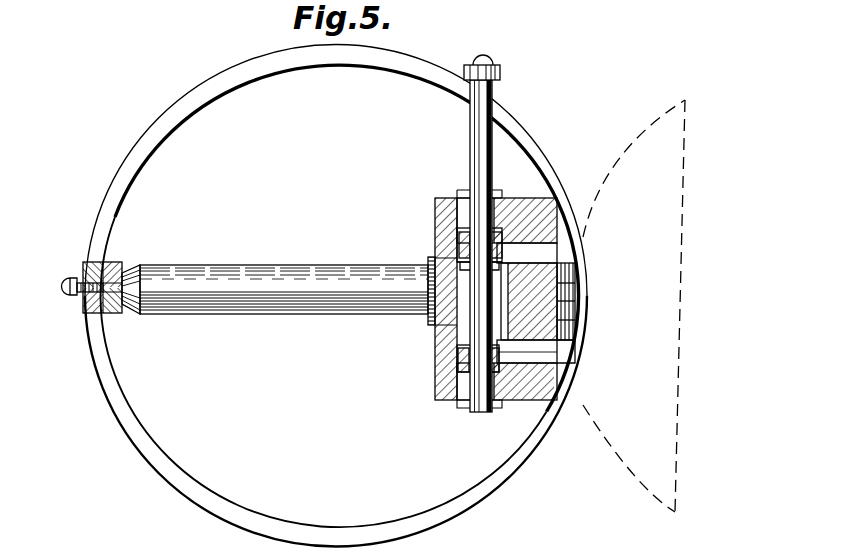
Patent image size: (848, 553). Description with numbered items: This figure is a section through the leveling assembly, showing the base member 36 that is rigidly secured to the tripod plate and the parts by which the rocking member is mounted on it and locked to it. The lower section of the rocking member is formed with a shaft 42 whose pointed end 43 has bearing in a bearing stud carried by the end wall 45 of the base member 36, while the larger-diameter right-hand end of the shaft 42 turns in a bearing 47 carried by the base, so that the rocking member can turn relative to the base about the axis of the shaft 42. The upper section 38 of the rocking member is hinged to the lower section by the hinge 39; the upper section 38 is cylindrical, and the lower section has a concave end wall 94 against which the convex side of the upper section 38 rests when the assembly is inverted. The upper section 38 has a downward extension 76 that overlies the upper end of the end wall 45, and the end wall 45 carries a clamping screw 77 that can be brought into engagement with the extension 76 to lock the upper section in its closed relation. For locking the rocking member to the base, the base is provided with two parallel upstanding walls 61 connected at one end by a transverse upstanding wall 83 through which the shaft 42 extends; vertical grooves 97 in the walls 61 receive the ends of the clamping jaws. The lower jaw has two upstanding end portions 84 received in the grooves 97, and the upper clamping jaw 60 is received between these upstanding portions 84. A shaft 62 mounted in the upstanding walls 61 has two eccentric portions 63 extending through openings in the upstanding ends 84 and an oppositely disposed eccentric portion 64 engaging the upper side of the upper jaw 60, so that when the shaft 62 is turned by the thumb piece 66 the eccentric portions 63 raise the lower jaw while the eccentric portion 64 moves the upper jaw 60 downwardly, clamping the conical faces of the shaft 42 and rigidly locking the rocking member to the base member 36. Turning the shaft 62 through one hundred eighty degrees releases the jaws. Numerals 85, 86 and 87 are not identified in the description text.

The base member 36 is at (132, 157).
The upper section 38 is at (578, 258).
The hinge 39 is at (576, 300).
The shaft 42 is at (262, 274).
The pointed end 43 is at (131, 274).
The end wall 45 is at (84, 302).
The bearing 47 is at (572, 364).
The upper clamping jaw 60 is at (540, 258).
The upstanding walls 61 is at (514, 198).
The shaft 62 is at (492, 150).
The eccentric portions 63 is at (460, 230).
The eccentric portion 64 is at (460, 258).
The thumb piece 66 is at (501, 78).
The downward extension 76 is at (116, 313).
The clamping screw 77 is at (88, 283).
The transverse upstanding wall 83 is at (457, 240).
The upstanding end portions 84 is at (556, 199).
The bore 85 is at (434, 323).
The pad 86 is at (576, 280).
The slot 87 is at (548, 372).
The concave end wall 94 is at (576, 322).
The vertical grooves 97 is at (461, 197).